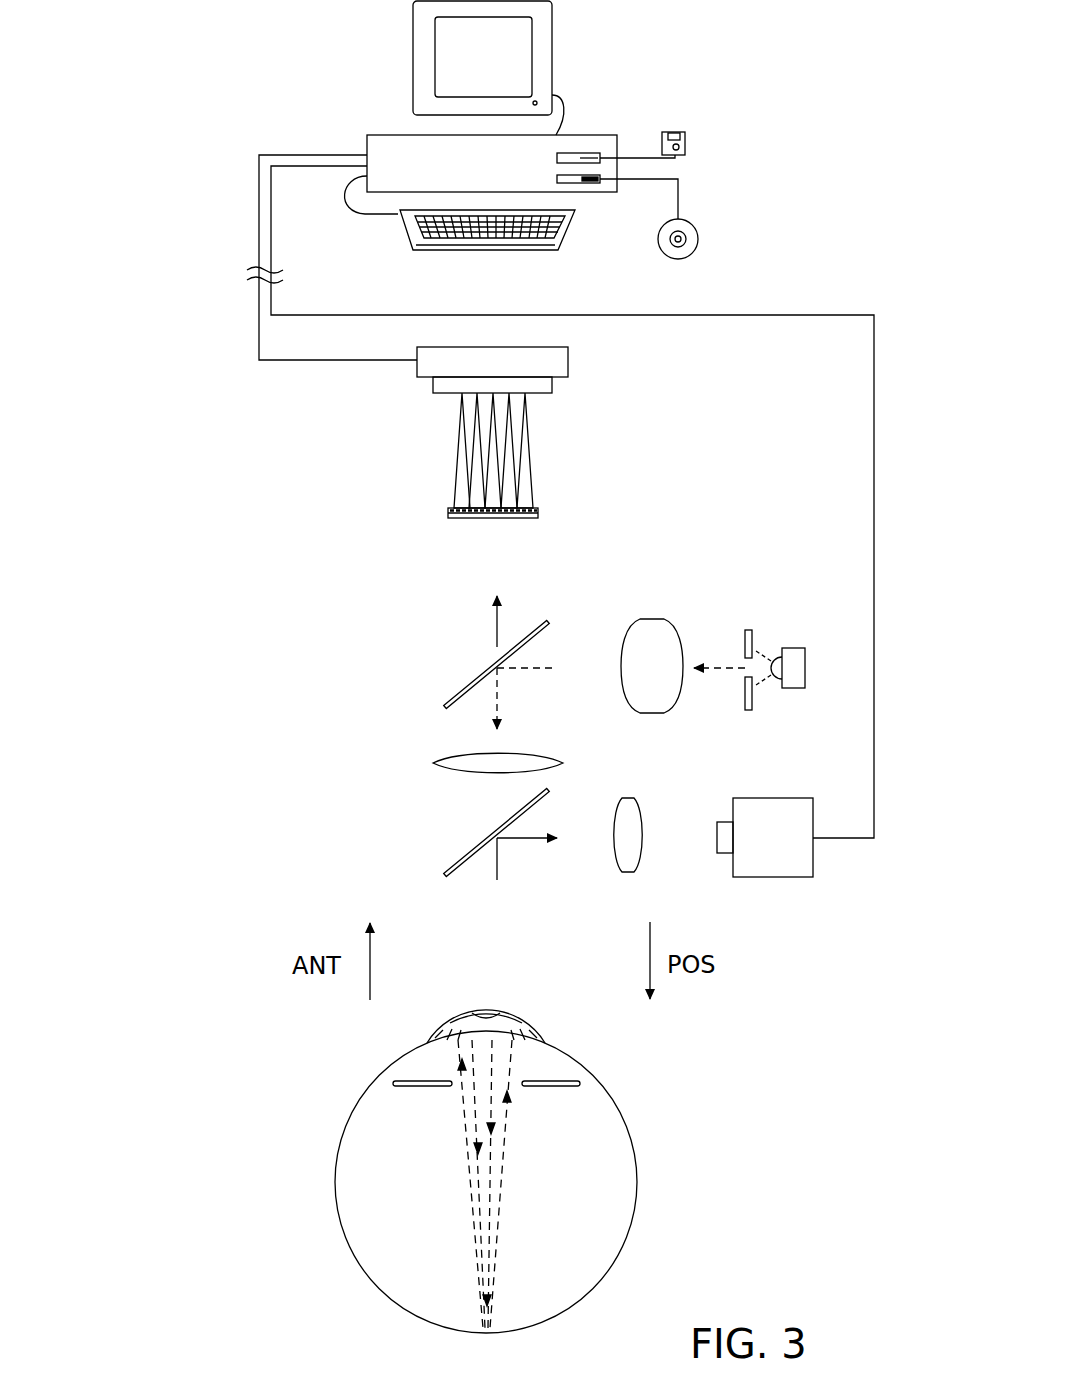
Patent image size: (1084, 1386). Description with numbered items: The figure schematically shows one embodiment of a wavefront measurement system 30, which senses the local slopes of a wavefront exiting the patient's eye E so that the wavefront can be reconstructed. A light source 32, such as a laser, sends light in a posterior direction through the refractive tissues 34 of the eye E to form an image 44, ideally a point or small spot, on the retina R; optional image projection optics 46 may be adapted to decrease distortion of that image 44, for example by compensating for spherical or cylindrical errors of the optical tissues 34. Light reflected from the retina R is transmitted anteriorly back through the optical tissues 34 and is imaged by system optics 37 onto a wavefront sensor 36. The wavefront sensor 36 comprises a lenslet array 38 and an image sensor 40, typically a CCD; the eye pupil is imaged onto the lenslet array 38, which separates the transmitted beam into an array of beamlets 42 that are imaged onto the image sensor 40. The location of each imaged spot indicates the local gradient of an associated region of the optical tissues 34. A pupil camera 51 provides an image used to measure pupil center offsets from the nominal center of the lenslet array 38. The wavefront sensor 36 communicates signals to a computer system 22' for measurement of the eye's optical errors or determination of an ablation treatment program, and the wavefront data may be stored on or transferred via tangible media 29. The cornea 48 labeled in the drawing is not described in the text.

The wavefront measurement system 30 is at (224, 74).
The computer system 22' is at (555, 125).
The tangible media 29 is at (685, 139).
The wavefront sensor 36 is at (490, 436).
The image sensor 40 is at (442, 394).
The beamlets 42 is at (487, 442).
The lenslet array 38 is at (448, 512).
The image projection optics 46 is at (652, 619).
The light source 32 is at (780, 611).
The system optics 37 is at (435, 763).
The pupil camera 51 is at (803, 877).
The cornea 48 is at (493, 1007).
The refractive tissues 34 is at (514, 998).
The image 44 is at (487, 1333).
The eye E is at (471, 1125).
The retina R is at (520, 1313).